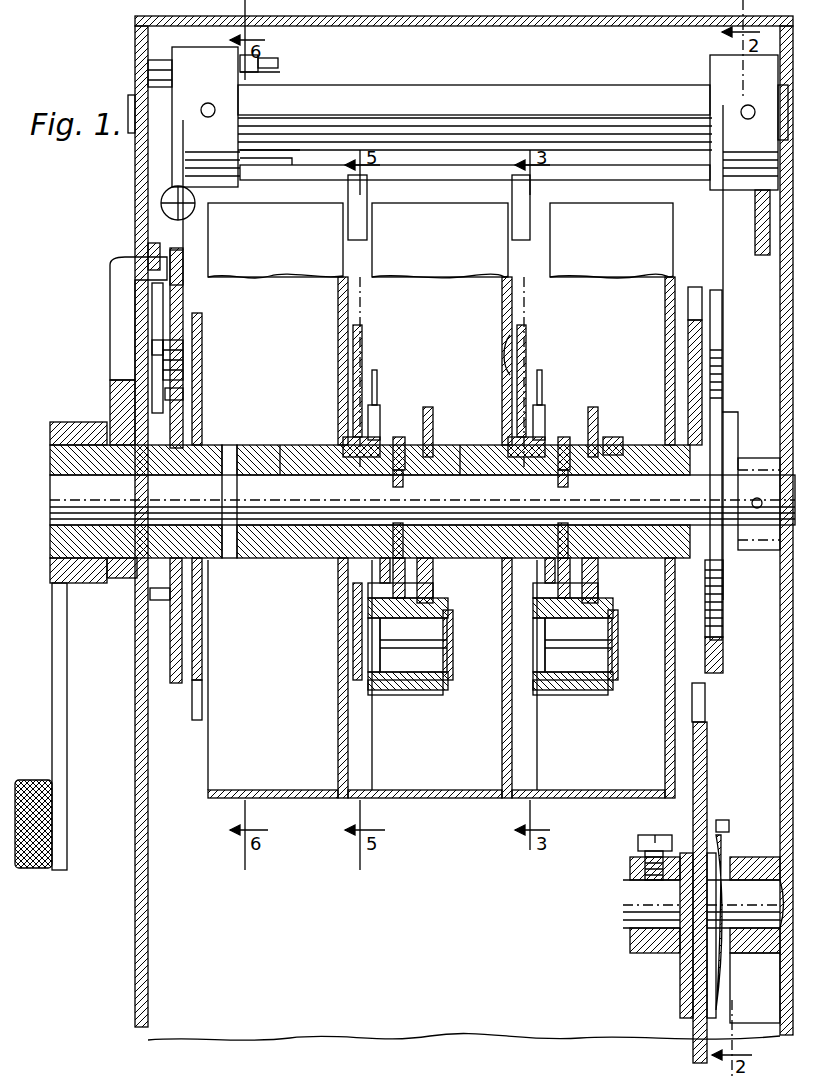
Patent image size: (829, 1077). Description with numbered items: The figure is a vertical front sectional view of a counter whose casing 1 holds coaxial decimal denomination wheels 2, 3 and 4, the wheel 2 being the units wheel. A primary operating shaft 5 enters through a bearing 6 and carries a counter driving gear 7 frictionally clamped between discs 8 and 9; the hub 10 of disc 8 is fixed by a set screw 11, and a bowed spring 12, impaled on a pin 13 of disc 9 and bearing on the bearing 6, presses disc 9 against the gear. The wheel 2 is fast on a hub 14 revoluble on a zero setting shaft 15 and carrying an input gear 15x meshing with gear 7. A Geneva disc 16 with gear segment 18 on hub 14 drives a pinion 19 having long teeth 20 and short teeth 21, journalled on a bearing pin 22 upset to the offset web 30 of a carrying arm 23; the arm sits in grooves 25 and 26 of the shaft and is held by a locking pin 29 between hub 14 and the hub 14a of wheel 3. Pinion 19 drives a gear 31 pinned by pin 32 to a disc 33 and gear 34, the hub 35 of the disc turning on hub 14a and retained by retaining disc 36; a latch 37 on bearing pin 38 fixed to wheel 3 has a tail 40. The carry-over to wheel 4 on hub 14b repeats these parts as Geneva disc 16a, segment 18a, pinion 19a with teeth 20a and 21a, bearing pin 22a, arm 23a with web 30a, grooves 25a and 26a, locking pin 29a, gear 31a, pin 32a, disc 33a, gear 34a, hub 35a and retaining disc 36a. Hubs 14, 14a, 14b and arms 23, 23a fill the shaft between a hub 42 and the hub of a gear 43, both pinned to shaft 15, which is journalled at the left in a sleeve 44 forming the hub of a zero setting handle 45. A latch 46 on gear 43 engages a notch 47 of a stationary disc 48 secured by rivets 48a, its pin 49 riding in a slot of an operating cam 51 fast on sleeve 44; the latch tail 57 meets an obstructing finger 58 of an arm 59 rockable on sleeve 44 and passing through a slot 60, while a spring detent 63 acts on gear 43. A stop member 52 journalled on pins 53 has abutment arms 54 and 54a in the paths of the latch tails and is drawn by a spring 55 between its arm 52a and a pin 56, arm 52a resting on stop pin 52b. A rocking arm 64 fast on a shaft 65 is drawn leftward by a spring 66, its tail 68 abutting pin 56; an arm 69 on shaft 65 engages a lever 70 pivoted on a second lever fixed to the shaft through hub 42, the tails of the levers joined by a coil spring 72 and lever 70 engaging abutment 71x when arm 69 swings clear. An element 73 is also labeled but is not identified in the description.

The casing 1 is at (140, 840).
The units wheel 2 is at (558, 800).
The denomination wheel 3 is at (392, 800).
The denomination wheel 4 is at (230, 800).
The primary operating shaft 5 is at (628, 898).
The bearing 6 is at (770, 945).
The counter driving gear 7 is at (706, 756).
The disc 8 is at (680, 978).
The disc 9 is at (716, 1012).
The hub portion 10 is at (632, 942).
The set screw 11 is at (638, 846).
The bowed spring 12 is at (730, 850).
The pin 13 is at (728, 820).
The hub 14 is at (645, 460).
The hub 14a is at (475, 455).
The hub 14b is at (280, 455).
The zero setting shaft 15 is at (305, 480).
The input gear 15x is at (703, 695).
The Geneva disc 16 is at (596, 410).
The Geneva disc 16a is at (428, 408).
The gear segment 18 is at (578, 425).
The gear segment 18a is at (420, 588).
The pinion 19 is at (575, 690).
The pinion 19a is at (408, 690).
The long teeth 20 is at (595, 695).
The long teeth 20a is at (425, 695).
The short teeth 21 is at (548, 690).
The short teeth 21a is at (380, 690).
The bearing pin 22 is at (600, 641).
The bearing pin 22a is at (435, 640).
The carrying arm 23 is at (580, 570).
The carrying arm 23a is at (392, 566).
The groove 25 is at (545, 457).
The groove 25a is at (350, 457).
The groove 26 is at (568, 528).
The groove 26a is at (400, 528).
The locking pin 29 is at (568, 480).
The locking pin 29a is at (398, 480).
The offset web 30 is at (616, 670).
The offset web 30a is at (450, 670).
The gear 31 is at (542, 395).
The gear 31a is at (375, 395).
The pin 32 is at (545, 412).
The pin 32a is at (380, 412).
The disc 33 is at (526, 340).
The disc 33a is at (362, 338).
The gear 34 is at (502, 410).
The gear 34a is at (338, 408).
The hub portion 35 is at (615, 440).
The hub portion 35a is at (338, 578).
The retaining disc 36 is at (564, 437).
The retaining disc 36a is at (398, 437).
The latch 37 is at (505, 320).
The bearing pin 38 is at (505, 352).
The tail 40 is at (500, 235).
The hub 42 is at (752, 458).
The gear 43 is at (203, 330).
The sleeve 44 is at (120, 578).
The zero setting handle 45 is at (36, 870).
The latch 46 is at (152, 350).
The notch 47 is at (183, 395).
The stationary disc 48 is at (150, 608).
The rivets 48a is at (170, 594).
The pin 49 is at (183, 357).
The operating cam 51 is at (185, 262).
The stop member 52 is at (445, 172).
The arm 52a is at (292, 160).
The stop pin 52b is at (280, 150).
The pins 53 is at (168, 225).
The abutment arm 54 is at (528, 195).
The abutment arm 54a is at (360, 200).
The spring 55 is at (290, 78).
The pin 56 is at (280, 60).
The tail portion 57 is at (152, 295).
The obstructing finger 58 is at (112, 268).
The arm 59 is at (115, 377).
The slot 60 is at (148, 255).
The spring detent 63 is at (185, 712).
The rocking arm 64 is at (175, 160).
The shaft 65 is at (390, 92).
The spring 66 is at (195, 210).
The tail 68 is at (205, 47).
The arm 69 is at (715, 230).
The lever 70 is at (722, 400).
The abutment 71x is at (724, 606).
The coil spring 72 is at (724, 652).
The bracket 73 is at (736, 420).